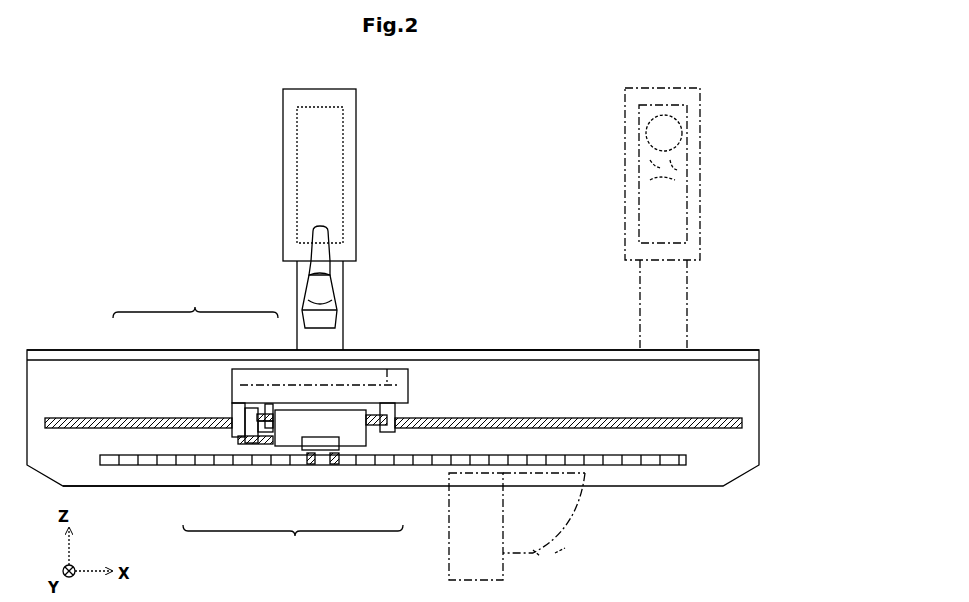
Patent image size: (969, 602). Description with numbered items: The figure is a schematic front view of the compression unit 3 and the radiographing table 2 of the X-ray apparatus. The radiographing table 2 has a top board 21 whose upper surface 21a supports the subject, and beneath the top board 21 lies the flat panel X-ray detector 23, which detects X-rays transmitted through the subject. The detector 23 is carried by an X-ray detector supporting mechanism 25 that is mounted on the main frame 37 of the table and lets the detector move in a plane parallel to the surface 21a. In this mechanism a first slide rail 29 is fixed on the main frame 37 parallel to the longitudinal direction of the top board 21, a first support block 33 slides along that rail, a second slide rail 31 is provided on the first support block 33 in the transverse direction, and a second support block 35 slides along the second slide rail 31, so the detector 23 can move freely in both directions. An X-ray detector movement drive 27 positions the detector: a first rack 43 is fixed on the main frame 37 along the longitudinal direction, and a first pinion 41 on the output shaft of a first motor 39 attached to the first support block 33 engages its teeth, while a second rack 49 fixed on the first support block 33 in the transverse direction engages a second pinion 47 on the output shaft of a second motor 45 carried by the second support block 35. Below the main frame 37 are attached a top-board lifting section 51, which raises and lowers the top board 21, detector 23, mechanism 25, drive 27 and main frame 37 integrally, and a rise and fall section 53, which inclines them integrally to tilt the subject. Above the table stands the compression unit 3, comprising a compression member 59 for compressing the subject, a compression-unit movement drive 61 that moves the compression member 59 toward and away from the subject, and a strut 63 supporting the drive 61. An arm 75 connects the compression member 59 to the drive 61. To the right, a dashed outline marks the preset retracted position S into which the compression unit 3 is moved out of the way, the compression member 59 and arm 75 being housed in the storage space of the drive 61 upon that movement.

The radiographing table 2 is at (668, 532).
The compression unit 3 is at (247, 106).
The top board 21 is at (473, 351).
The surface 21a is at (540, 349).
The flat panel X-ray detector 23 is at (410, 383).
The X-ray detector supporting mechanism 25 is at (195, 303).
The X-ray detector movement drive 27 is at (293, 541).
The first slide rail 29 is at (137, 418).
The second slide rail 31 is at (253, 420).
The first support block 33 is at (316, 432).
The second support block 35 is at (259, 412).
The main frame 37 is at (117, 487).
The first motor 39 is at (335, 464).
The first pinion 41 is at (313, 450).
The first rack 43 is at (385, 465).
The second motor 45 is at (240, 432).
The second pinion 47 is at (252, 444).
The second rack 49 is at (270, 446).
The top-board lifting section 51 is at (449, 540).
The rise and fall section 53 is at (544, 527).
The compression member 59 is at (330, 316).
The compression-unit movement drive 61 is at (288, 178).
The strut 63 is at (344, 276).
The arm 75 is at (322, 257).
The retracted position S is at (622, 145).